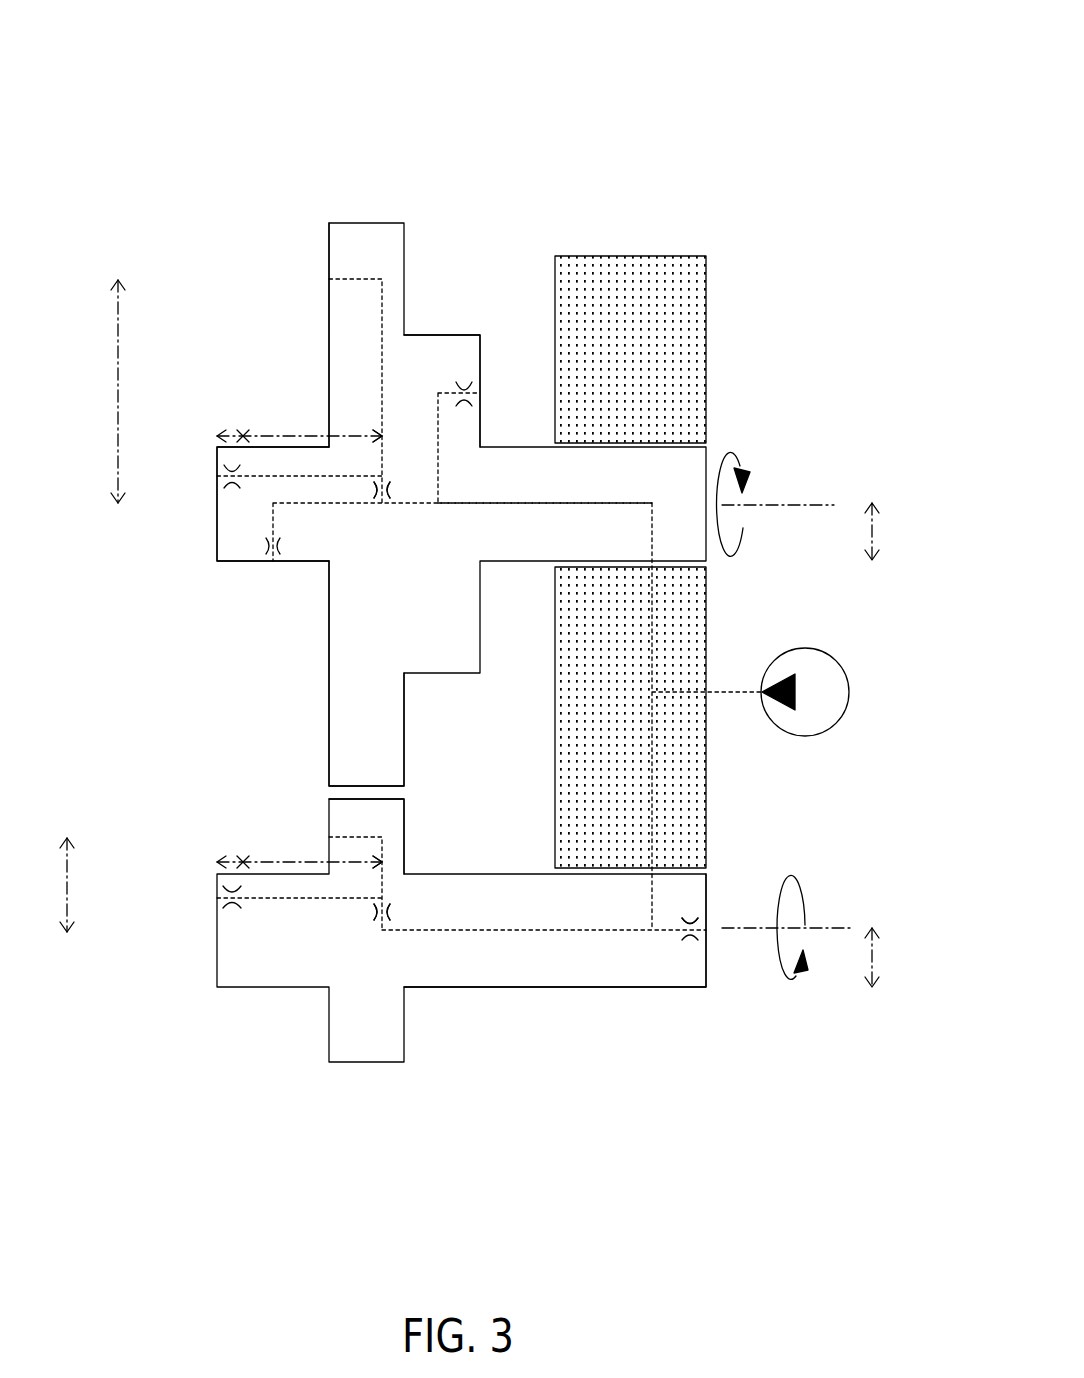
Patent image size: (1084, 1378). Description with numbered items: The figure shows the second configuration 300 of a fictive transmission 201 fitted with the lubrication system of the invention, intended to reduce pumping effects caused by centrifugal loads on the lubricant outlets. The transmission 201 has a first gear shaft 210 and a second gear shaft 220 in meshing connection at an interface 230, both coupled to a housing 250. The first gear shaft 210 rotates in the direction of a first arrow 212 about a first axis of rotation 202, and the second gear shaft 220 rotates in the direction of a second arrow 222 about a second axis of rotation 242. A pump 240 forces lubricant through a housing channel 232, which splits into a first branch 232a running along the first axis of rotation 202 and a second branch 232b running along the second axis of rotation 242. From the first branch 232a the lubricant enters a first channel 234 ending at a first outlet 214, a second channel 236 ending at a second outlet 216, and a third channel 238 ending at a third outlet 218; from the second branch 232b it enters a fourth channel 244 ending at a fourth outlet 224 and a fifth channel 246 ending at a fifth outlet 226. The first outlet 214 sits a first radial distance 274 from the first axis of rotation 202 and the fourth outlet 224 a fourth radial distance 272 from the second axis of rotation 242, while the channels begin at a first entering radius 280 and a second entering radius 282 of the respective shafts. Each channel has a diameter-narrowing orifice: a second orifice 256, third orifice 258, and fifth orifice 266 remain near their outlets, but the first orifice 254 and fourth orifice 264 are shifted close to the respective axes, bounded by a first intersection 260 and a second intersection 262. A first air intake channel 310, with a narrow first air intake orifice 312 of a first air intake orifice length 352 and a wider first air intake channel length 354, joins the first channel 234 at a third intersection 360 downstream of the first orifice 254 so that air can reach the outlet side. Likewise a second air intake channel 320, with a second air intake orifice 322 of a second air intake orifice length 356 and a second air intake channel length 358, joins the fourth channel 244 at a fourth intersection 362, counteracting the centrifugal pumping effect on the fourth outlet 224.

The second configuration 300 is at (852, 32).
The transmission 201 is at (745, 192).
The first gear shaft 210 is at (365, 222).
The second gear shaft 220 is at (350, 1063).
The housing 250 is at (643, 375).
The first outlet 214 is at (312, 265).
The second outlet 216 is at (484, 368).
The third outlet 218 is at (272, 585).
The interface 230 is at (310, 768).
The fourth outlet 224 is at (318, 826).
The fifth outlet 226 is at (722, 943).
The first channel 234 is at (382, 327).
The second channel 236 is at (438, 490).
The third channel 238 is at (302, 507).
The first air intake channel 310 is at (273, 480).
The first air intake orifice 312 is at (232, 472).
The housing channel 232 is at (680, 692).
The first branch 232a is at (640, 503).
The second branch 232b is at (640, 928).
The fourth channel 244 is at (382, 885).
The fifth channel 246 is at (675, 932).
The second air intake channel 320 is at (318, 902).
The second air intake orifice 322 is at (232, 908).
The first orifice 254 is at (398, 493).
The second orifice 256 is at (462, 388).
The third orifice 258 is at (273, 550).
The first intersection 260 is at (385, 506).
The second intersection 262 is at (385, 930).
The fourth orifice 264 is at (368, 919).
The fifth orifice 266 is at (695, 918).
The third intersection 360 is at (382, 480).
The fourth intersection 362 is at (390, 900).
The first air intake orifice length 352 is at (225, 432).
The first air intake channel length 354 is at (329, 436).
The second air intake orifice length 356 is at (225, 858).
The second air intake channel length 358 is at (329, 862).
The first radial distance 274 is at (118, 280).
The fourth radial distance 272 is at (67, 838).
The first axis of rotation 202 is at (834, 512).
The second axis of rotation 242 is at (822, 928).
The first arrow 212 is at (742, 472).
The second arrow 222 is at (800, 896).
The first entering radius 280 is at (870, 550).
The second entering radius 282 is at (870, 990).
The pump 240 is at (838, 656).